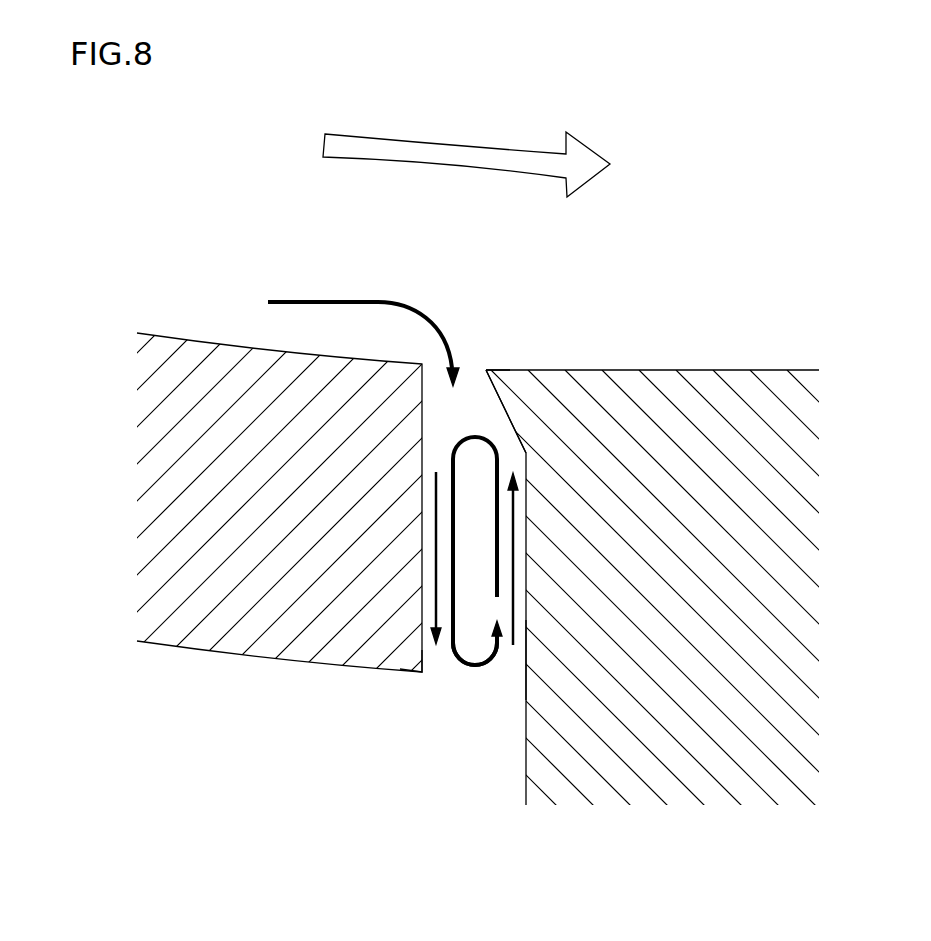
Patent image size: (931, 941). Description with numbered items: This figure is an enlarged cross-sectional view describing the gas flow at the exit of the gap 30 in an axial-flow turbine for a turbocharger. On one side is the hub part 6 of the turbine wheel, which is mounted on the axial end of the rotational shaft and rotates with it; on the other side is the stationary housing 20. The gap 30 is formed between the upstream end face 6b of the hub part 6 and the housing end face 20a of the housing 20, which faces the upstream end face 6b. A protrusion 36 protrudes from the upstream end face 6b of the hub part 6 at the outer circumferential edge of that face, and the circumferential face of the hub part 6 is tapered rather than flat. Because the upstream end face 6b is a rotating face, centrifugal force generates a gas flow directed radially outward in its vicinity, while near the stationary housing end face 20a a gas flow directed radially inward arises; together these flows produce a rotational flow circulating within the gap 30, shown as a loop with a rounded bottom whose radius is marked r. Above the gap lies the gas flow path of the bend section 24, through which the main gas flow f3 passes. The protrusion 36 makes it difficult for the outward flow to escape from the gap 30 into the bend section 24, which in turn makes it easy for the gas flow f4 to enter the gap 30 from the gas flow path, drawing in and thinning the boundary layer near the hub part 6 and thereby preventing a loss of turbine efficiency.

The housing 20 is at (245, 516).
The housing end face 20a is at (430, 666).
The bend section 24 is at (257, 216).
The gap 30 is at (487, 564).
The protrusion 36 is at (494, 378).
The hub part 6 is at (656, 587).
The upstream end face 6b is at (526, 660).
The main flow direction f3 is at (439, 148).
The gas flow f4 is at (328, 300).
The radius of vortex bottom r is at (470, 672).